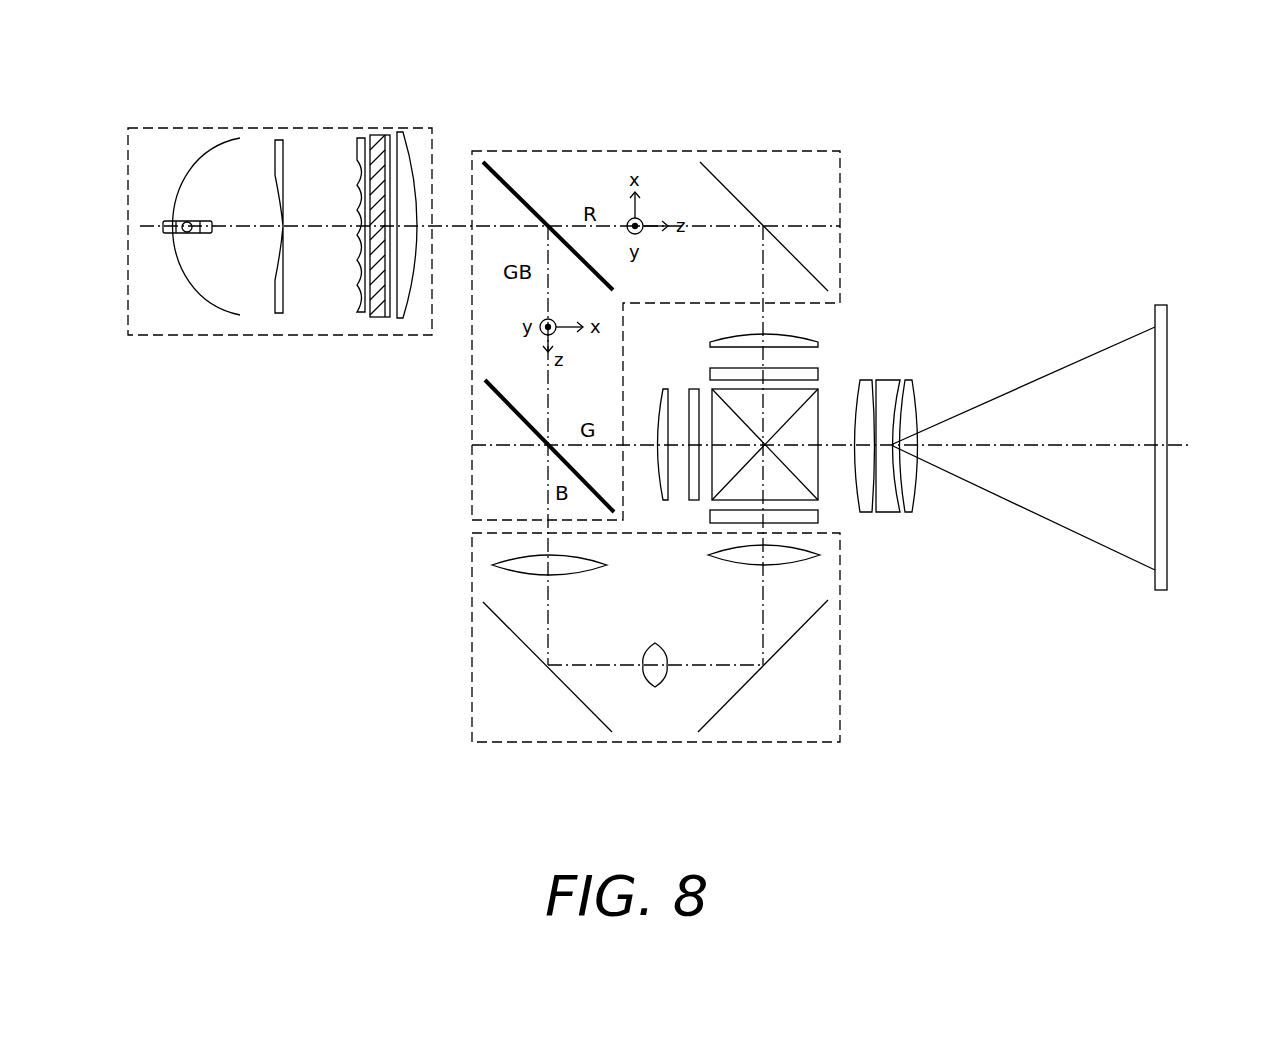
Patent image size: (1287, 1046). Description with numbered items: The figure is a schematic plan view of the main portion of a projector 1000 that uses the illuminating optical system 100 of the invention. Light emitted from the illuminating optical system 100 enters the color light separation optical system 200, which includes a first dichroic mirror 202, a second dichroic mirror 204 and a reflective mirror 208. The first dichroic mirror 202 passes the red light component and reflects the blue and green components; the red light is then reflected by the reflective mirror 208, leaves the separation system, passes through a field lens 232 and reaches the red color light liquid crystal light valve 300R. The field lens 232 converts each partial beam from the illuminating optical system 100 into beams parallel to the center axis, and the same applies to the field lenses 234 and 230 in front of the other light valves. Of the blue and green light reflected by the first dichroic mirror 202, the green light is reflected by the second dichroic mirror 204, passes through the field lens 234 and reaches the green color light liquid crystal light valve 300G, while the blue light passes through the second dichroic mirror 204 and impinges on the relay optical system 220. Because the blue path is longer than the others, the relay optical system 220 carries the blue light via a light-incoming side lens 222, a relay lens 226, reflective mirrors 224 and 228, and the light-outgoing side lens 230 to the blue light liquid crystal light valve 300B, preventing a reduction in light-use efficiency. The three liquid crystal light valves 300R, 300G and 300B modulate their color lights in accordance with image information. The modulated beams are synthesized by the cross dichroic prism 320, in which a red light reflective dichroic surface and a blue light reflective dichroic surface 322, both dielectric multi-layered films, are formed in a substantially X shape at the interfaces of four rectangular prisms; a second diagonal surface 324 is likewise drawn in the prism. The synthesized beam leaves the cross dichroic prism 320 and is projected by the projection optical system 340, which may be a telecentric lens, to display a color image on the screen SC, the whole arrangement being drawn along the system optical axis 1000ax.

The projector 1000 is at (137, 50).
The illuminating optical system 100 is at (247, 126).
The color light separation optical system 200 is at (538, 148).
The first dichroic mirror 202 is at (517, 193).
The second dichroic mirror 204 is at (510, 408).
The reflective mirror 208 is at (730, 187).
The relay optical system 220 is at (470, 560).
The light-incoming side lens 222 is at (603, 563).
The reflective mirror 224 is at (523, 643).
The relay lens 226 is at (652, 645).
The reflective mirror 228 is at (792, 640).
The light-outgoing side lens 230 is at (713, 560).
The field lens 232 is at (793, 323).
The field lens 234 is at (663, 388).
The red color light liquid crystal light valve 300R is at (708, 372).
The green color light liquid crystal light valve 300G is at (695, 389).
The blue light liquid crystal light valve 300B is at (710, 517).
The cross dichroic prism 320 is at (818, 390).
The blue light reflective dichroic surface 322 is at (820, 410).
The dichroic film 324 is at (820, 487).
The projection optical system 340 is at (888, 378).
The screen SC is at (1158, 305).
The system optical axis 1000ax is at (1187, 445).